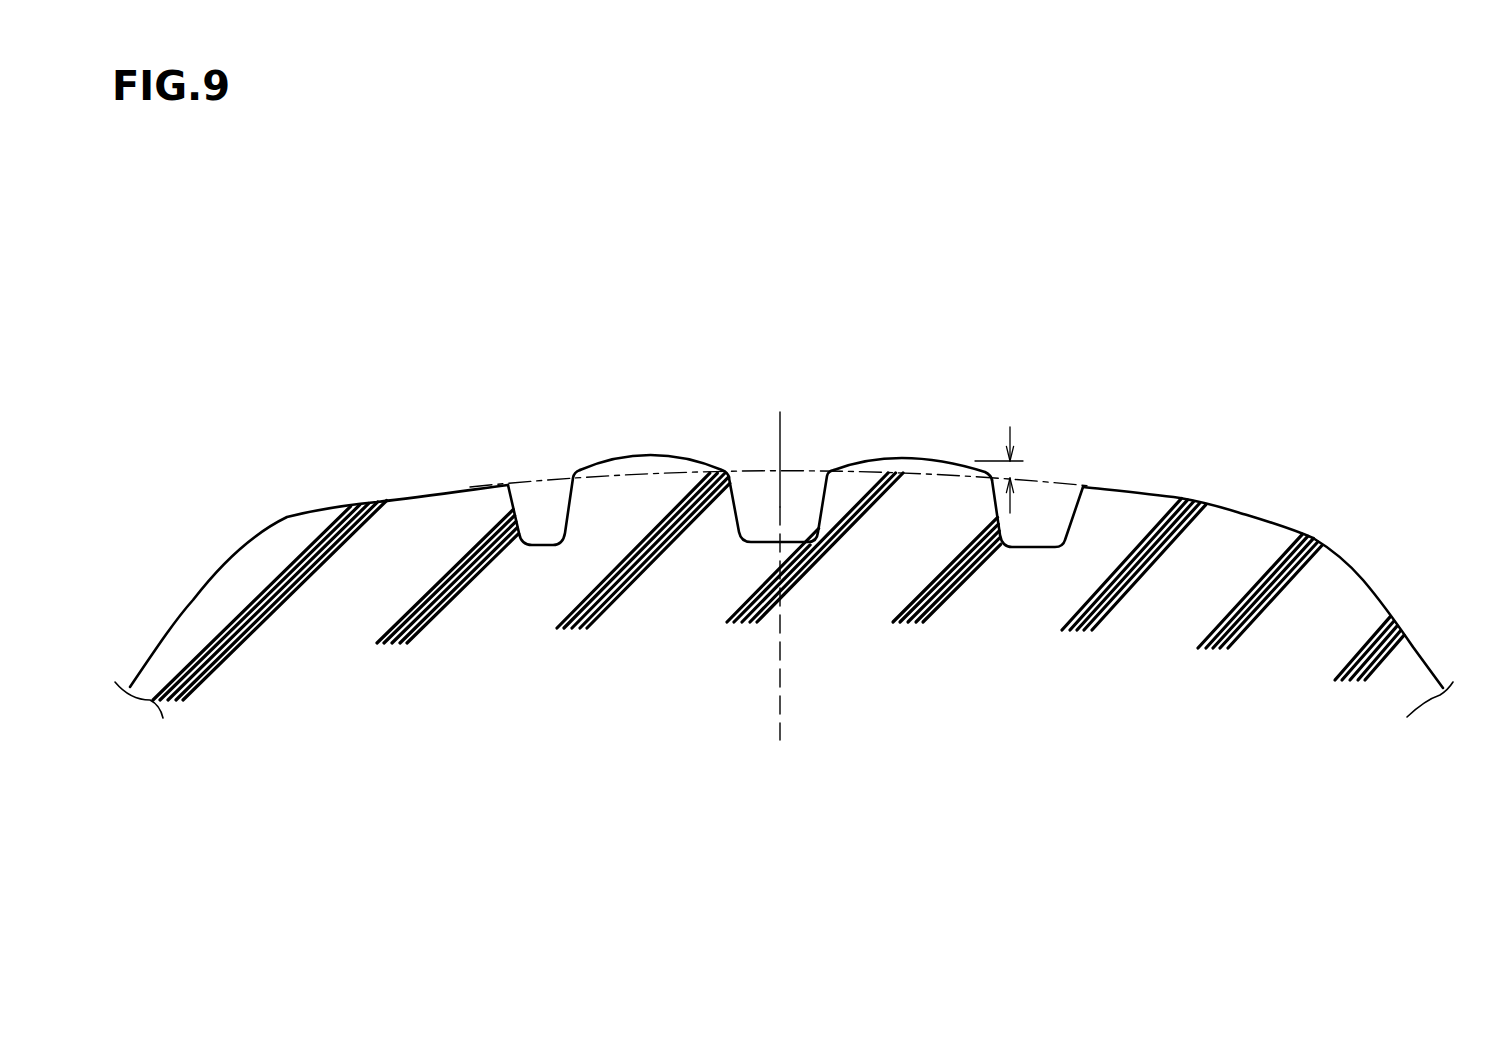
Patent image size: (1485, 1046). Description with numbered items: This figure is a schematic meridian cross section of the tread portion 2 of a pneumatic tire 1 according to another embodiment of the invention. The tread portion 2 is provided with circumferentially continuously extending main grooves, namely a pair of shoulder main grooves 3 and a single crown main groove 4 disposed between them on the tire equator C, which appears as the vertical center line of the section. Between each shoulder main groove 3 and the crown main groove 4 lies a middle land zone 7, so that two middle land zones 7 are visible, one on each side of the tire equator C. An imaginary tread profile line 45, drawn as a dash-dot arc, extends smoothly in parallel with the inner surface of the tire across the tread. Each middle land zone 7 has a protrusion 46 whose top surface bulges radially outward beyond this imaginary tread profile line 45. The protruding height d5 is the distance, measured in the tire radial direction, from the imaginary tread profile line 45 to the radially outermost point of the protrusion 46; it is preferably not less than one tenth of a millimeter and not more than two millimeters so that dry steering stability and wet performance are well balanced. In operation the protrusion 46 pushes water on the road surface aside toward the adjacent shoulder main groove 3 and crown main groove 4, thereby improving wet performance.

The pneumatic tire 1 is at (784, 514).
The tread portion 2 is at (1115, 470).
The shoulder main groove 3 is at (542, 508).
The crown main groove 4 is at (758, 500).
The middle land zone 7 is at (829, 377).
The imaginary tread profile line 45 is at (866, 470).
The protrusion 46 is at (655, 453).
The protruding height d5 is at (1010, 467).
The tire equator C is at (779, 560).